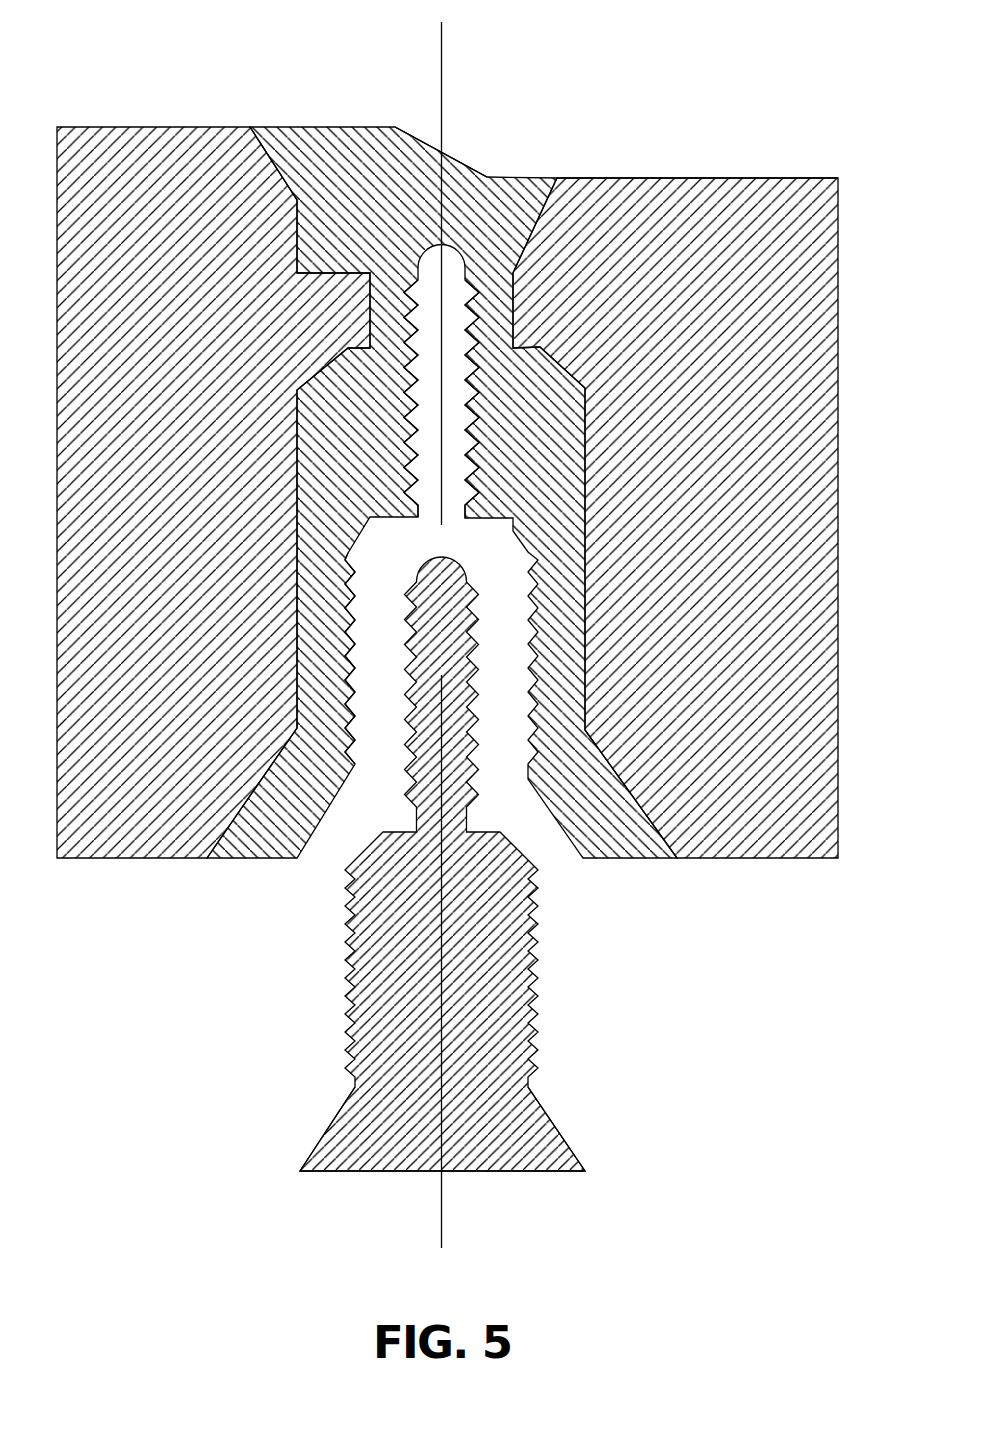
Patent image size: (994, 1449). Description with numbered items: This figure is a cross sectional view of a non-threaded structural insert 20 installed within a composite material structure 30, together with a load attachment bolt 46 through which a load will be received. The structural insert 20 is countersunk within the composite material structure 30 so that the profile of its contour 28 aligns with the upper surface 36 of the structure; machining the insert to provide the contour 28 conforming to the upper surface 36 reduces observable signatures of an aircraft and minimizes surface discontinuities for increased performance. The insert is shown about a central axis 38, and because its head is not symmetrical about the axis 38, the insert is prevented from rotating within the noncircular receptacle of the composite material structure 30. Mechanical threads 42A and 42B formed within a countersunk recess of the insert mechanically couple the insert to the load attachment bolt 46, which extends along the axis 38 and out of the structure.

The non-threaded structural insert 20 is at (318, 147).
The contour 28 is at (453, 157).
The composite material structure 30 is at (838, 383).
The upper surface 36 is at (722, 178).
The axis 38 is at (441, 67).
The mechanical threads 42A is at (410, 519).
The mechanical threads 42B is at (480, 700).
The load attachment bolt 46 is at (555, 1123).